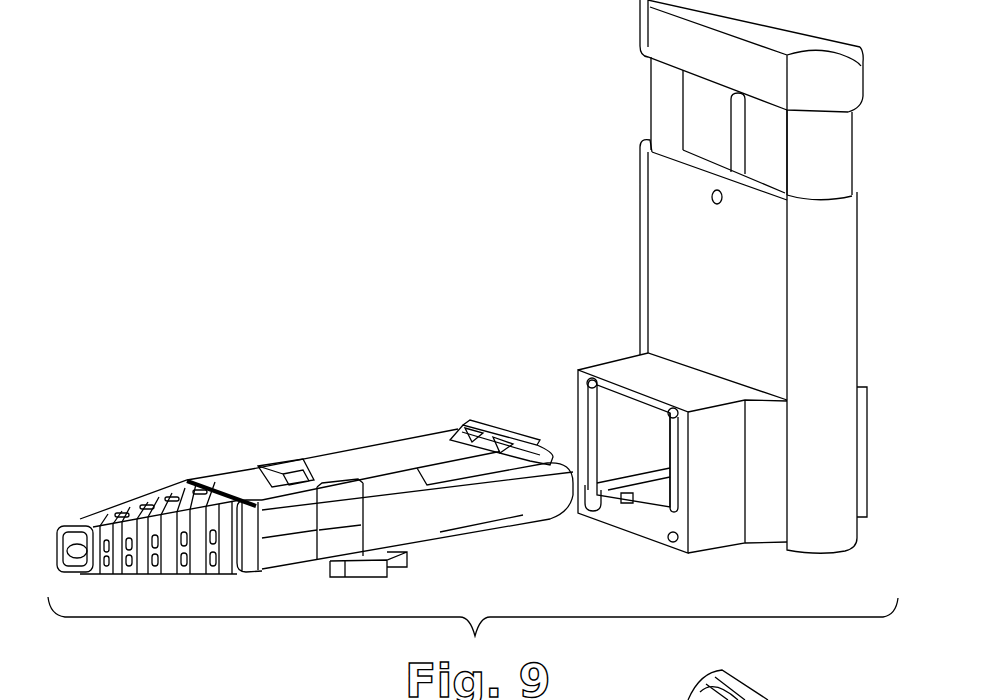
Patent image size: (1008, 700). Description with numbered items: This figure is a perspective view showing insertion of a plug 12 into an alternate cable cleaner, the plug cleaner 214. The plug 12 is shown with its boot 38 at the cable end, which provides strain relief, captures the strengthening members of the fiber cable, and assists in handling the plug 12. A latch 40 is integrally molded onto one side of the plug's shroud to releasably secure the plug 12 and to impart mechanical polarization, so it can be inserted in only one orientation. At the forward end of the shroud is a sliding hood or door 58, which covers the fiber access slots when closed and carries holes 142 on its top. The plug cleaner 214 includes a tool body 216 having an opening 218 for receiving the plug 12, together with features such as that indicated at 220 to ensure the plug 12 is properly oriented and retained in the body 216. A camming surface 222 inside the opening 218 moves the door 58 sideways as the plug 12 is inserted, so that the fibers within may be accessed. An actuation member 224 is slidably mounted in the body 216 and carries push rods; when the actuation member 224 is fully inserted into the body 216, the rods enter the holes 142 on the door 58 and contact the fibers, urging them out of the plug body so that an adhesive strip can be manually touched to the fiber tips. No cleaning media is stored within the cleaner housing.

The plug 12 is at (315, 428).
The boot 38 is at (130, 505).
The latch 40 is at (365, 574).
The door 58 is at (505, 428).
The holes 142 is at (482, 427).
The plug cleaner 214 is at (612, 185).
The tool body 216 is at (845, 325).
The opening 218 is at (625, 450).
The orientation and retention feature 220 is at (628, 503).
The camming surface 222 is at (615, 429).
The actuation member 224 is at (840, 170).